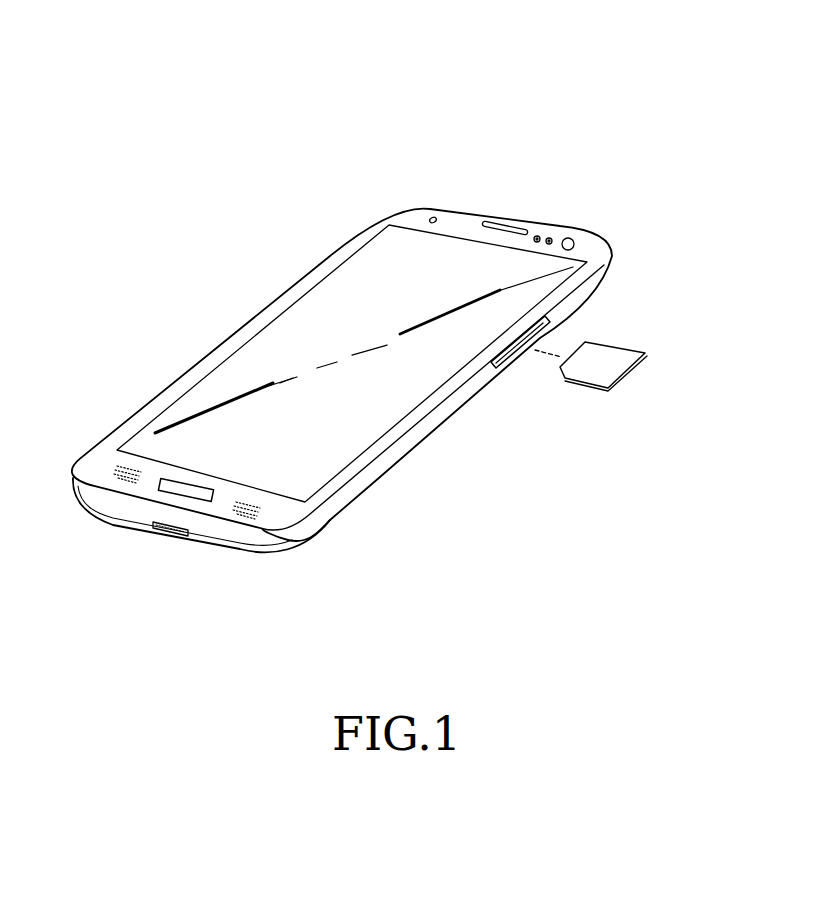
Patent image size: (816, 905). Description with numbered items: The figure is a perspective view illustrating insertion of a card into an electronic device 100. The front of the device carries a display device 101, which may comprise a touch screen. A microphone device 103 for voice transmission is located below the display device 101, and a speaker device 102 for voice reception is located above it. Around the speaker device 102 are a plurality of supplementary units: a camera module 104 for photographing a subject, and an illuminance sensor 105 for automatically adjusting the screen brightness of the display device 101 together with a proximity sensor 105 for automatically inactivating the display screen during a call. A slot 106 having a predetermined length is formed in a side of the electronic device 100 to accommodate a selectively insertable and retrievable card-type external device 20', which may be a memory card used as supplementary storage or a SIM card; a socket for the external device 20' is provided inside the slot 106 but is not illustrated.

The electronic device 100 is at (104, 112).
The display device 101 is at (335, 288).
The speaker device 102 is at (509, 224).
The microphone device 103 is at (203, 540).
The camera module 104 is at (572, 240).
The illuminance sensor and proximity sensor 105 is at (549, 240).
The slot 106 is at (510, 357).
The card-type external device 20' is at (604, 338).